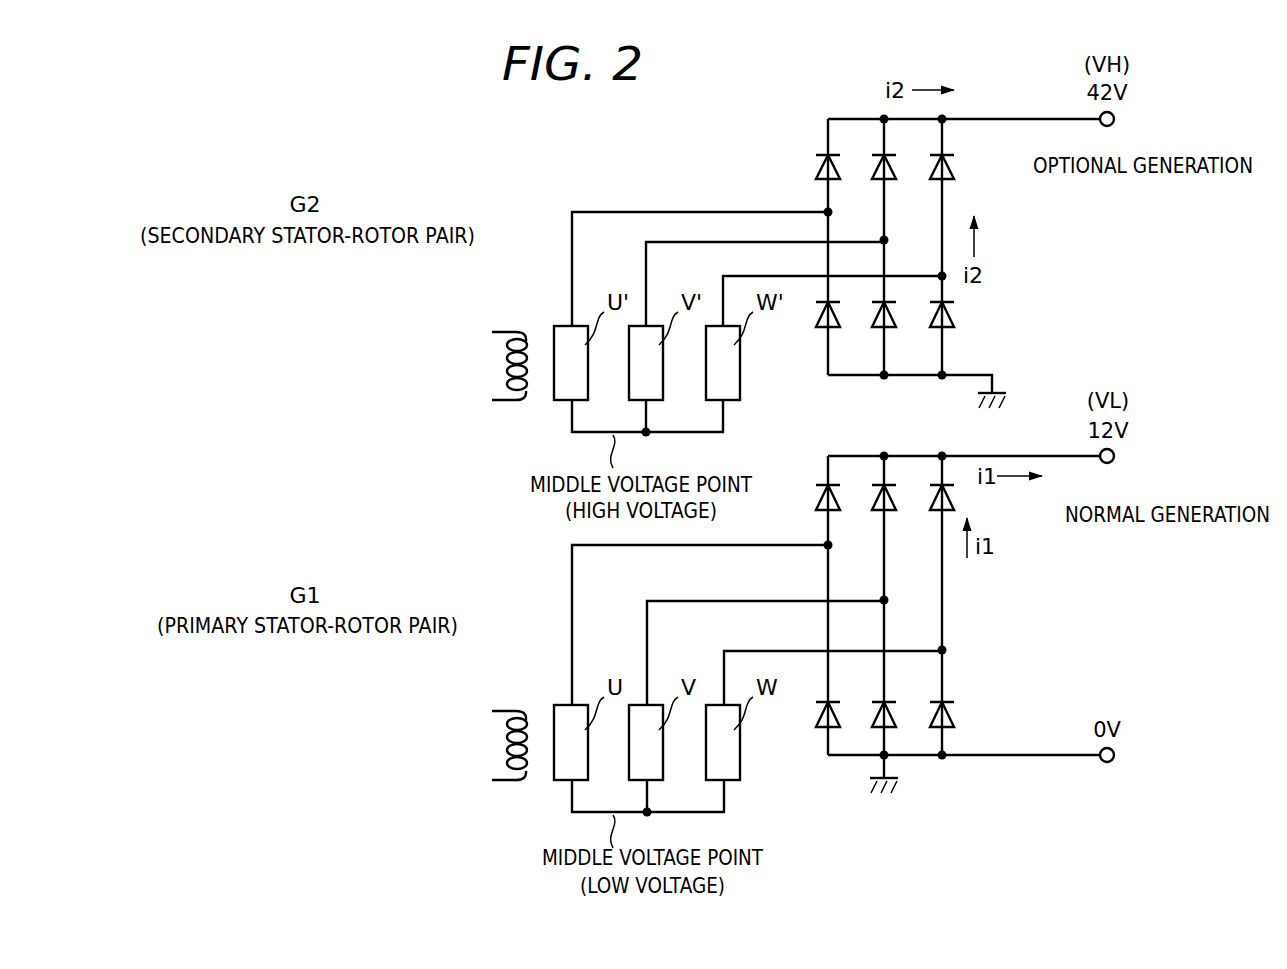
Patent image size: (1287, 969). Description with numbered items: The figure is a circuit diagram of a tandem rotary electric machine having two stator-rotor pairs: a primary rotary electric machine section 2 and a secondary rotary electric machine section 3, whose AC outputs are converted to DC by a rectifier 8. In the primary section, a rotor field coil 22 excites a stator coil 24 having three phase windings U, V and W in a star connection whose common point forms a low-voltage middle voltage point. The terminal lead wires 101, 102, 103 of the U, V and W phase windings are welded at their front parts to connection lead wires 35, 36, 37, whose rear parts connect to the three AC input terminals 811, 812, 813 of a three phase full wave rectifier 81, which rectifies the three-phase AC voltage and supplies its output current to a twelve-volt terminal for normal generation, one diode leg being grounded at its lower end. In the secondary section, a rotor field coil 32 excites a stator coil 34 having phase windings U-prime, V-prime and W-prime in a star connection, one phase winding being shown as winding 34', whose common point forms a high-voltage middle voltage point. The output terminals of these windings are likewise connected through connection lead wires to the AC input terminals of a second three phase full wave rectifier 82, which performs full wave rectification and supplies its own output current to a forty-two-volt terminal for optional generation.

The primary rotary electric machine section 2 is at (551, 796).
The secondary rotary electric machine section 3 is at (556, 194).
The rectifier 8 is at (891, 802).
The primary rotor field coil 22 is at (500, 745).
The stator coil 24 is at (559, 611).
The secondary rotor field coil 32 is at (500, 365).
The stator coil 34 is at (610, 364).
The secondary stator winding phase U' 34' is at (543, 319).
The connection lead wire 35 is at (762, 545).
The connection lead wire 36 is at (748, 600).
The connection lead wire 37 is at (757, 651).
The three phase full wave rectifier 81 is at (818, 710).
The three phase full wave rectifier 82 is at (819, 152).
The terminal lead wire 101 is at (572, 655).
The terminal lead wire 102 is at (647, 620).
The terminal lead wire 103 is at (724, 660).
The AC input terminal 811 is at (828, 567).
The AC input terminal 812 is at (884, 583).
The AC input terminal 813 is at (942, 630).